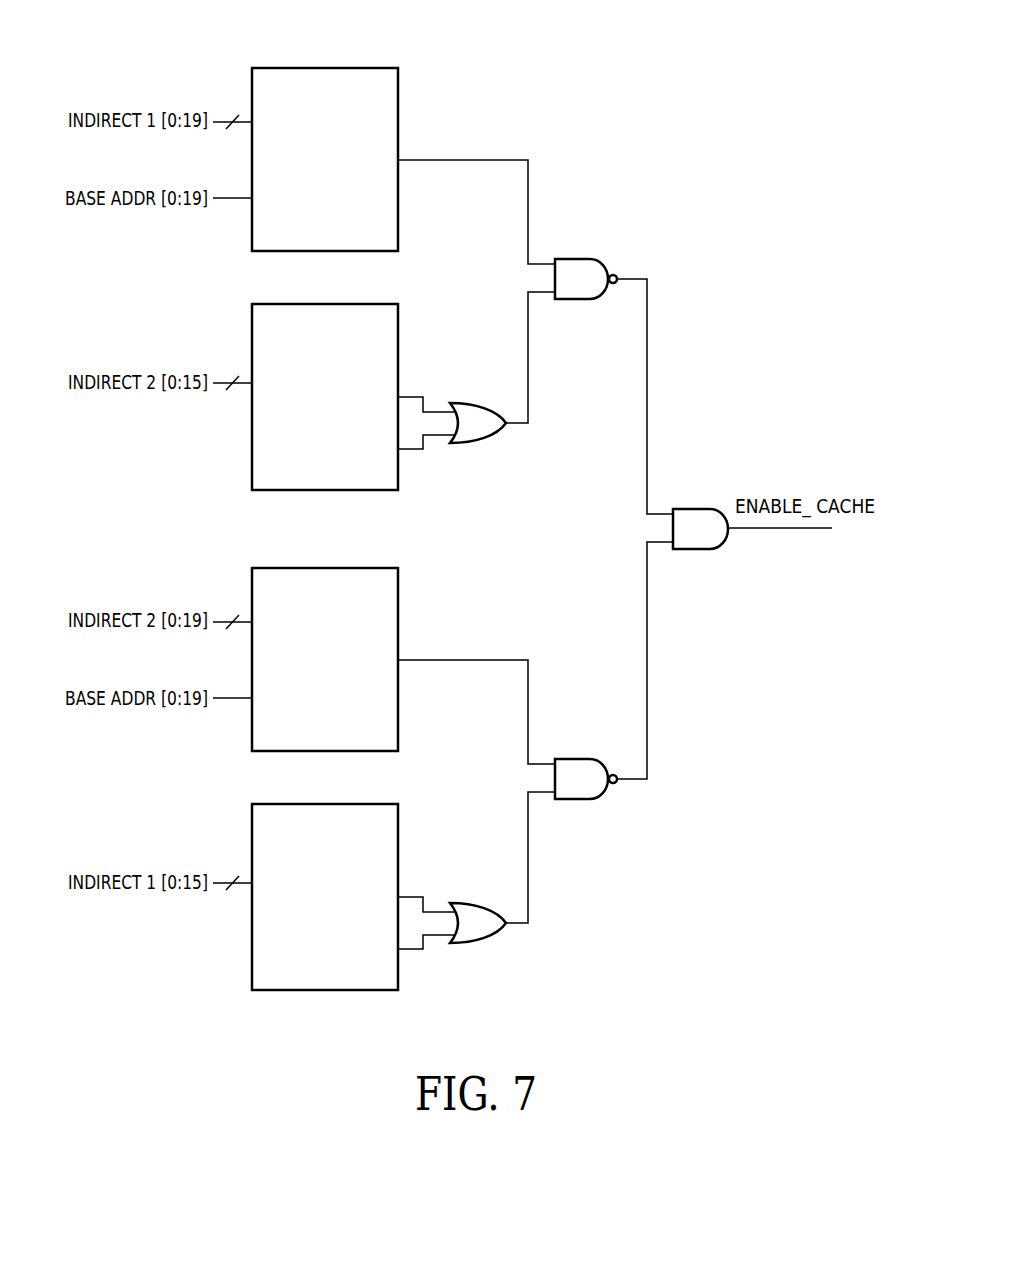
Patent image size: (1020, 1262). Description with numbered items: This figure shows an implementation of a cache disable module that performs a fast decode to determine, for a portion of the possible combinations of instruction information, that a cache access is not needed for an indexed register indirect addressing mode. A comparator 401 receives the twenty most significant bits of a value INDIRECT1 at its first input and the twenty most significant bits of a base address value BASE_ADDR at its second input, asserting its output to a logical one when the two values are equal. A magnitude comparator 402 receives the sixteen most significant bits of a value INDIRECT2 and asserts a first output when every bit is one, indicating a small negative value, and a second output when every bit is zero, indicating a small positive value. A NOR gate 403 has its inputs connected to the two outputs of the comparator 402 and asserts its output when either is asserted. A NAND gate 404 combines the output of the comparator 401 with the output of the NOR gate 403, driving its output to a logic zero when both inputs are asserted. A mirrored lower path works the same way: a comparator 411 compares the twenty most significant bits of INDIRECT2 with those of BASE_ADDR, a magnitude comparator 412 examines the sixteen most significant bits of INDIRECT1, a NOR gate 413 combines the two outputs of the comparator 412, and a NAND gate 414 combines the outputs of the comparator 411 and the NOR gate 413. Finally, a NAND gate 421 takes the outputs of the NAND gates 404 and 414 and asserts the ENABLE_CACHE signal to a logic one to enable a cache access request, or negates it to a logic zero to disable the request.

The comparator 401 is at (350, 68).
The comparator 402 is at (350, 304).
The NOR gate 403 is at (467, 403).
The NAND gate 404 is at (578, 259).
The comparator 411 is at (350, 568).
The comparator 412 is at (350, 804).
The NOR gate 413 is at (467, 903).
The NAND gate 414 is at (578, 759).
The NAND gate 421 is at (698, 509).